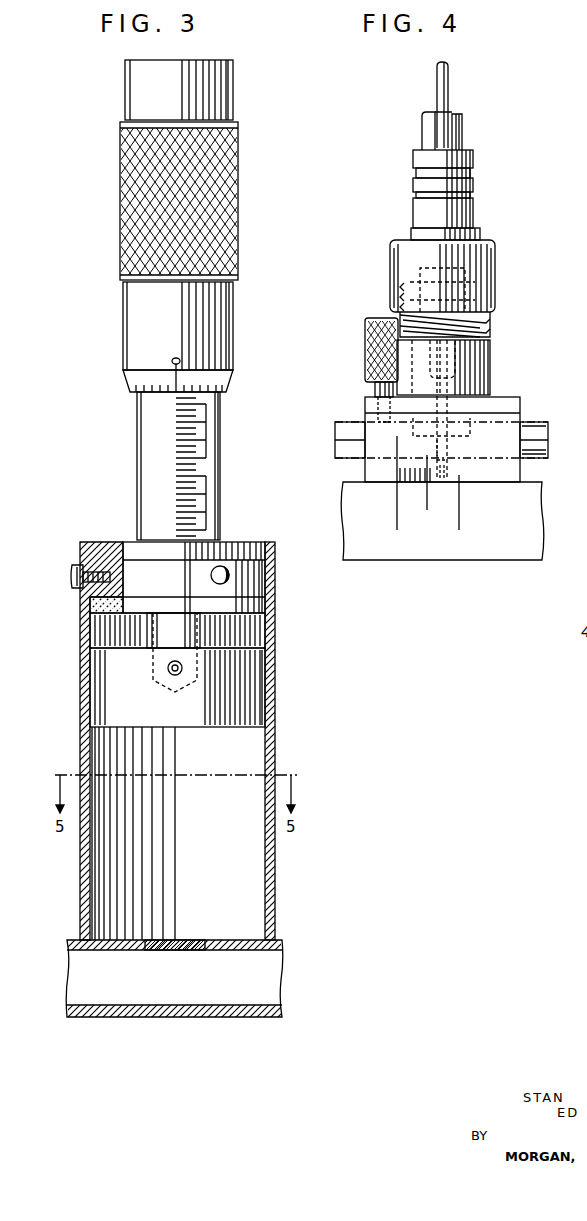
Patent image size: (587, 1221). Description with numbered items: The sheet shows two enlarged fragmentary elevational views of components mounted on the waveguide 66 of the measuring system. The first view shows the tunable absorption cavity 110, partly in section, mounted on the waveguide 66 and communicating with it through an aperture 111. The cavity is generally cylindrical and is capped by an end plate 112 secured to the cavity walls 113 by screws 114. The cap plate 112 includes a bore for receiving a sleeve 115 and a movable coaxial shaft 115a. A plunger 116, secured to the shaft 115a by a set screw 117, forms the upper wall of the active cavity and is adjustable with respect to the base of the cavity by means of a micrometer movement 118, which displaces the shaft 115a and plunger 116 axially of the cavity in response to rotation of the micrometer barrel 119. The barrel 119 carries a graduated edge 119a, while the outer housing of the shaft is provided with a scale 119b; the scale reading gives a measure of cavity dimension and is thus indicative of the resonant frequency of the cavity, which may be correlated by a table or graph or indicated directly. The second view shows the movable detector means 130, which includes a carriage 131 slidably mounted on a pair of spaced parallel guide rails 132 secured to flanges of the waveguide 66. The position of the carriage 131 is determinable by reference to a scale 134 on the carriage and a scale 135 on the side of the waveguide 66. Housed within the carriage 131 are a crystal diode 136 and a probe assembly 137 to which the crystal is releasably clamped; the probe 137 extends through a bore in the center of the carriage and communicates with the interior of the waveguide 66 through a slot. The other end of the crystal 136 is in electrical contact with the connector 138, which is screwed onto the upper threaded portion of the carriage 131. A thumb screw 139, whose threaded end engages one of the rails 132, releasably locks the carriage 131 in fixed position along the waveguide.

In FIG. 3, the micrometer movement 118 is at (98, 294).
In FIG. 3, the micrometer barrel 119 is at (125, 318).
In FIG. 3, the beveled graduated edge of thimble 119a is at (128, 382).
In FIG. 3, the scale 119b is at (140, 444).
In FIG. 3, the tunable absorption cavity 110 is at (240, 530).
In FIG. 3, the cavity walls 113 is at (270, 663).
In FIG. 3, the screws 114 is at (74, 566).
In FIG. 3, the end plate 112 is at (156, 592).
In FIG. 3, the sleeve 115 is at (200, 630).
In FIG. 3, the coaxial shaft 115a is at (147, 630).
In FIG. 3, the plunger 116 is at (97, 704).
In FIG. 3, the set screw 117 is at (170, 676).
In FIG. 3, the aperture 111 is at (208, 941).
In FIG. 3, the waveguide 66 is at (128, 1008).
In FIG. 4, the waveguide 66 is at (536, 510).
In FIG. 4, the connector 138 is at (420, 210).
In FIG. 4, the movable detector means 130 is at (380, 270).
In FIG. 4, the thumb screw 139 is at (365, 337).
In FIG. 4, the carriage 131 is at (500, 379).
In FIG. 4, the crystal diode 136 is at (470, 358).
In FIG. 4, the probe assembly 137 is at (470, 416).
In FIG. 4, the guide rails 132 is at (526, 422).
In FIG. 4, the scale 134 is at (456, 473).
In FIG. 4, the scale 135 is at (460, 518).